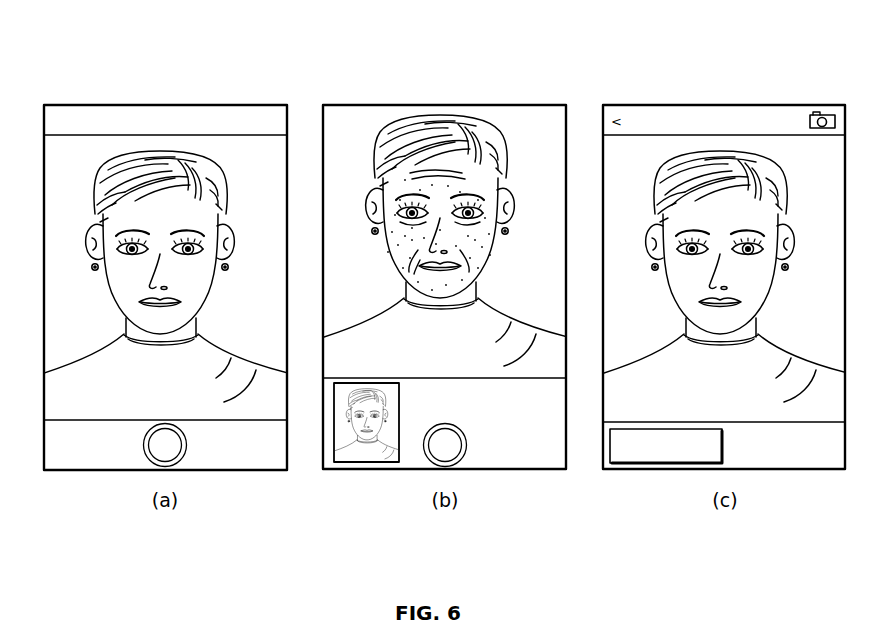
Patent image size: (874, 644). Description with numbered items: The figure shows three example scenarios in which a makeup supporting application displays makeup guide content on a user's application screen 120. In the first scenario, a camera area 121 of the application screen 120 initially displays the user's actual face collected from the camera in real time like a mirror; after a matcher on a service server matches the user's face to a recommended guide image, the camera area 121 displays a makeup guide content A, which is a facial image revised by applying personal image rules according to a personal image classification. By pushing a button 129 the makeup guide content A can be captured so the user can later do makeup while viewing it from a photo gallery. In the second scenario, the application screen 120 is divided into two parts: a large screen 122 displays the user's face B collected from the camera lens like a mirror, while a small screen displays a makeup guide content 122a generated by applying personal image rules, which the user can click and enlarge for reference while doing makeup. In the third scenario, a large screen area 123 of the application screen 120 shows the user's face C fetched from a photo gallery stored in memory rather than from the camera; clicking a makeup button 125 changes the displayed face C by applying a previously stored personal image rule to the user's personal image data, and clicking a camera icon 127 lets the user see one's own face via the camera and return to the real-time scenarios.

The application screen 120 is at (92, 102).
The camera area 121 is at (148, 228).
The large screen 122 is at (446, 205).
The makeup guide content 122a is at (362, 455).
The large screen area 123 is at (726, 230).
The makeup button 125 is at (636, 464).
The camera icon 127 is at (822, 112).
The button 129 is at (175, 447).
The makeup guide content A is at (108, 301).
The user's face B is at (490, 140).
The user's face C is at (760, 165).